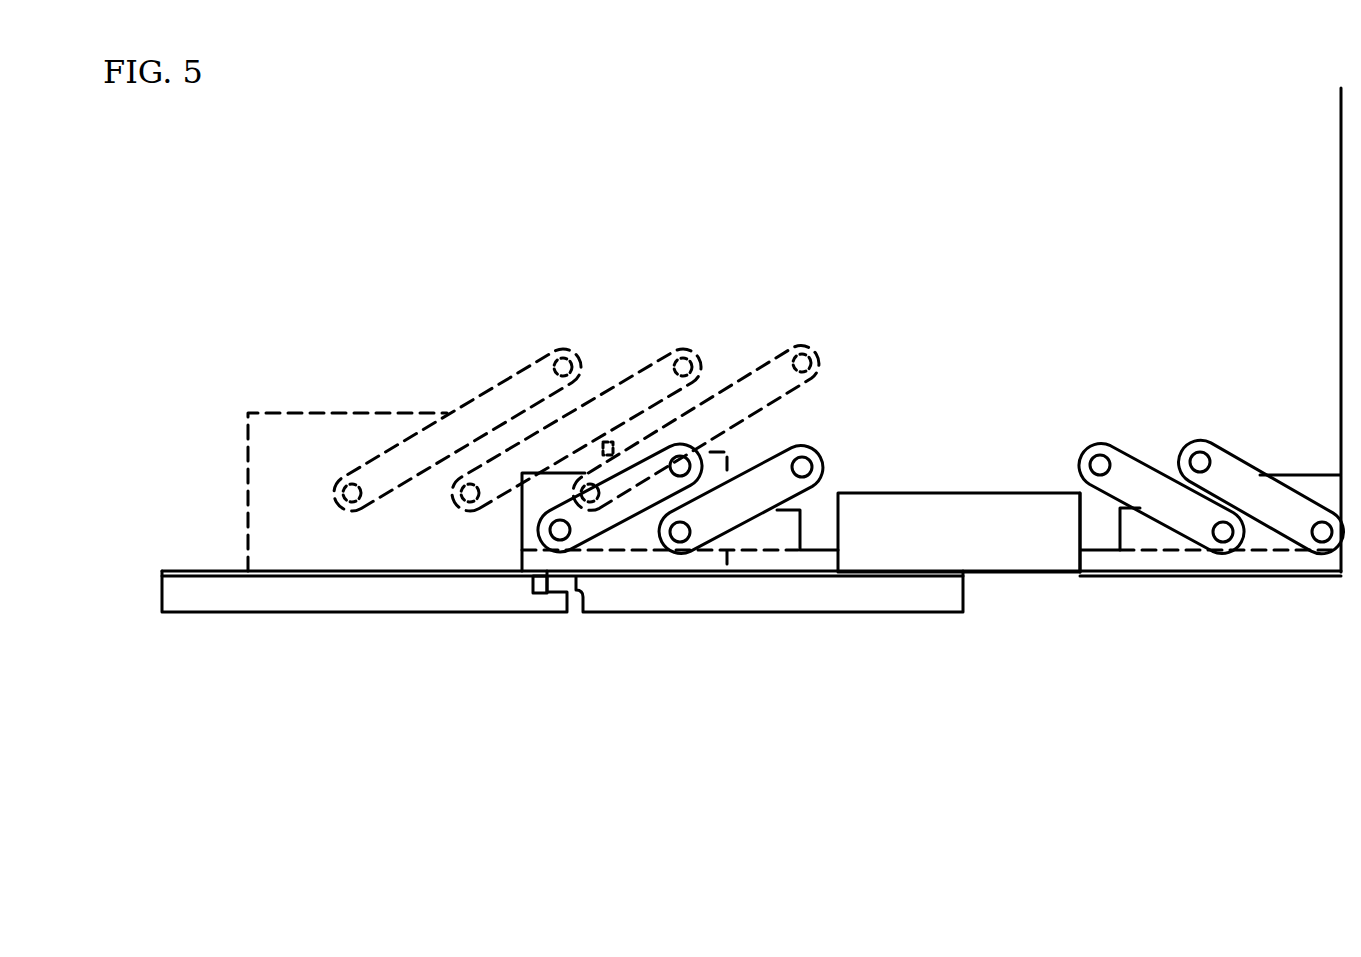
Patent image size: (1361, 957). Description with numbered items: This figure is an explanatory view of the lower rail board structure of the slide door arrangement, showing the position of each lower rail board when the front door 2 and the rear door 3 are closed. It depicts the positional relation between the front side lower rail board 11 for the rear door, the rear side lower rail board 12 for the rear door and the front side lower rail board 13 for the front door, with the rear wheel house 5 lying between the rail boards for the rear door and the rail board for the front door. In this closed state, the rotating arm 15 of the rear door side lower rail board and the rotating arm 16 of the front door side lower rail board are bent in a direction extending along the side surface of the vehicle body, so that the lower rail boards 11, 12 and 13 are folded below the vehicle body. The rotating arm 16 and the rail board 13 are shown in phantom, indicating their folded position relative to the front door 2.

The front door 2 is at (478, 602).
The rear door 3 is at (865, 602).
The rear wheel house 5 is at (1033, 545).
The front side lower rail board for the rear door 11 is at (772, 530).
The rear side lower rail board for the rear door 12 is at (1267, 540).
The front side lower rail board for the front door 13 is at (309, 416).
The rotating arm of the rear door side lower rail board 15 is at (778, 452).
The rotating arm of the front door side lower rail board 16 is at (498, 405).